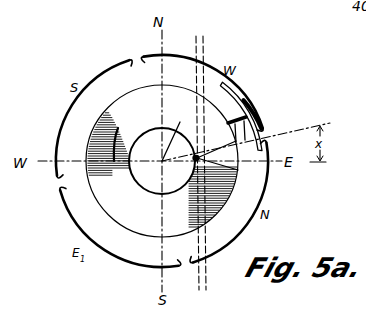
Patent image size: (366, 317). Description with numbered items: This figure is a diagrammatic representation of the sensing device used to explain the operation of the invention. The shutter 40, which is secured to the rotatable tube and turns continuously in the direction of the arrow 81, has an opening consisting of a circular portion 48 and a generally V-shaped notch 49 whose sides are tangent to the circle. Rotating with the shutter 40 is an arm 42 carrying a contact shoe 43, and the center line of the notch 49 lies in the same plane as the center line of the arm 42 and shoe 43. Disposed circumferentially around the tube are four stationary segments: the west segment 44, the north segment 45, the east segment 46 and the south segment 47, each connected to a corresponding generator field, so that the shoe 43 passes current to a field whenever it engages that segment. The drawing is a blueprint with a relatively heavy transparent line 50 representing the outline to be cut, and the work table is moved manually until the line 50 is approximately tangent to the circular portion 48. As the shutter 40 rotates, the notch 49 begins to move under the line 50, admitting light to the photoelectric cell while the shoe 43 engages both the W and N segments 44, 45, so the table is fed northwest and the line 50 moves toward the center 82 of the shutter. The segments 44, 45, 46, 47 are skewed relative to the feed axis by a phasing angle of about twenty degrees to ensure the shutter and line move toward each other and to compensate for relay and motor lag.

The shutter 40 is at (150, 234).
The arm 42 is at (243, 134).
The contact shoe 43 is at (231, 124).
The west segment 44 is at (240, 106).
The north segment 45 is at (246, 232).
The east segment 46 is at (123, 263).
The south segment 47 is at (60, 134).
The circular portion 48 is at (144, 190).
The V-shaped notch 49 is at (238, 171).
The transparent line 50 is at (205, 53).
The arrow 81 is at (118, 128).
The center 82 is at (183, 131).